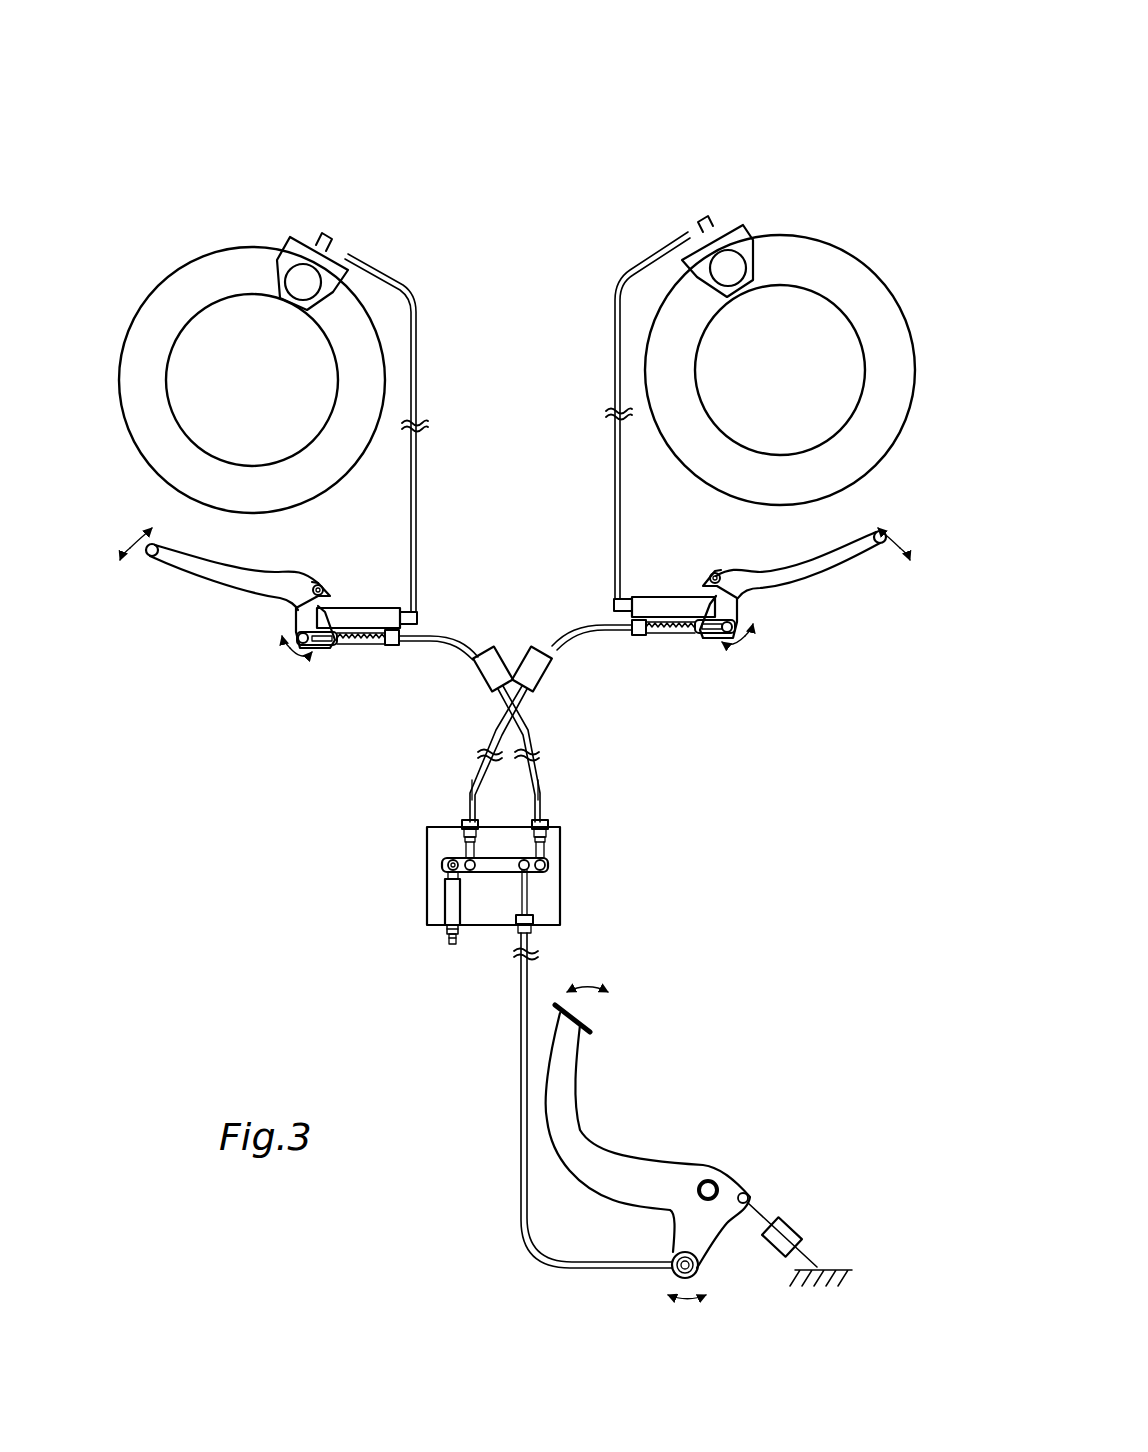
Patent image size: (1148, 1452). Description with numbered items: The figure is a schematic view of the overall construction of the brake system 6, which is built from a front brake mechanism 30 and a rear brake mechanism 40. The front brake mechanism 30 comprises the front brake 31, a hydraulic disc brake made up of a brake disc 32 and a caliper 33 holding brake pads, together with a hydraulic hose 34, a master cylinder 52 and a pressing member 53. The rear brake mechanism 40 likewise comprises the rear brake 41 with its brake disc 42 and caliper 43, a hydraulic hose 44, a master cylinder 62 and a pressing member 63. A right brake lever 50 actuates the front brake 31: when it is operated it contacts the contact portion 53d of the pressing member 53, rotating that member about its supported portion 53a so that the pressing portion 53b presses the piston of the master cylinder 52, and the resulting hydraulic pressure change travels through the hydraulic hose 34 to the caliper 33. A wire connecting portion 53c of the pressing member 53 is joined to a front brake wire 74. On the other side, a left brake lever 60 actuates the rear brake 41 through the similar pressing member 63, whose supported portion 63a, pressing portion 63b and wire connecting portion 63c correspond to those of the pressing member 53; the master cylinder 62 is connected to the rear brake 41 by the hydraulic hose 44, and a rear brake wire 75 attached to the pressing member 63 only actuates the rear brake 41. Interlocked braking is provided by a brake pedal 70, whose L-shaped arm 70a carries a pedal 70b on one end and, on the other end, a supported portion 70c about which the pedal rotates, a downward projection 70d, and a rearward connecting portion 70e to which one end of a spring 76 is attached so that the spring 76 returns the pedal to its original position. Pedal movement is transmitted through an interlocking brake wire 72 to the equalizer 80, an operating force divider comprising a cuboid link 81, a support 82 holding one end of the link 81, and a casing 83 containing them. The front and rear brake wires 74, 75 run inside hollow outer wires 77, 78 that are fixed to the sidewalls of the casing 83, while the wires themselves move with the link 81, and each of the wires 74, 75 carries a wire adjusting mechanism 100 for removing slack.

The brake system 6 is at (807, 105).
The front brake mechanism 30 is at (592, 443).
The front brake 31 is at (676, 212).
The brake disc 32 is at (832, 265).
The caliper 33 is at (742, 240).
The hydraulic hose 34 is at (615, 372).
The rear brake mechanism 40 is at (438, 522).
The rear brake 41 is at (352, 222).
The brake disc 42 is at (178, 285).
The caliper 43 is at (292, 250).
The hydraulic hose 44 is at (414, 340).
The right brake lever 50 is at (845, 580).
The master cylinder 52 is at (662, 597).
The pressing member 53 is at (752, 603).
The supported portion 53a is at (716, 572).
The pressing portion 53b is at (742, 618).
The wire connecting portion 53c is at (726, 642).
The contact portion 53d is at (748, 566).
The left brake lever 60 is at (194, 592).
The master cylinder 62 is at (370, 607).
The pressing member 63 is at (290, 616).
The supported portion 63a is at (318, 584).
The pressing portion 63b is at (300, 626).
The wire connecting portion 63c is at (306, 648).
The brake pedal 70 is at (686, 1122).
The arm 70a is at (575, 1133).
The pedal 70b is at (592, 1024).
The supported portion 70c is at (716, 1172).
The projection 70d is at (708, 1232).
The connecting portion 70e is at (756, 1193).
The interlocking brake wire 72 is at (520, 1114).
The front brake wire 74 is at (480, 774).
The rear brake wire 75 is at (530, 774).
The spring 76 is at (520, 1184).
The outer wire 77 is at (533, 634).
The outer wire 78 is at (523, 733).
The equalizer 80 is at (574, 878).
The link 81 is at (497, 876).
The support 82 is at (450, 905).
The casing 83 is at (427, 836).
The wire adjusting mechanism 100 is at (492, 668).